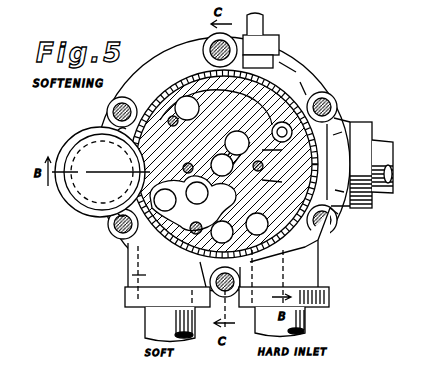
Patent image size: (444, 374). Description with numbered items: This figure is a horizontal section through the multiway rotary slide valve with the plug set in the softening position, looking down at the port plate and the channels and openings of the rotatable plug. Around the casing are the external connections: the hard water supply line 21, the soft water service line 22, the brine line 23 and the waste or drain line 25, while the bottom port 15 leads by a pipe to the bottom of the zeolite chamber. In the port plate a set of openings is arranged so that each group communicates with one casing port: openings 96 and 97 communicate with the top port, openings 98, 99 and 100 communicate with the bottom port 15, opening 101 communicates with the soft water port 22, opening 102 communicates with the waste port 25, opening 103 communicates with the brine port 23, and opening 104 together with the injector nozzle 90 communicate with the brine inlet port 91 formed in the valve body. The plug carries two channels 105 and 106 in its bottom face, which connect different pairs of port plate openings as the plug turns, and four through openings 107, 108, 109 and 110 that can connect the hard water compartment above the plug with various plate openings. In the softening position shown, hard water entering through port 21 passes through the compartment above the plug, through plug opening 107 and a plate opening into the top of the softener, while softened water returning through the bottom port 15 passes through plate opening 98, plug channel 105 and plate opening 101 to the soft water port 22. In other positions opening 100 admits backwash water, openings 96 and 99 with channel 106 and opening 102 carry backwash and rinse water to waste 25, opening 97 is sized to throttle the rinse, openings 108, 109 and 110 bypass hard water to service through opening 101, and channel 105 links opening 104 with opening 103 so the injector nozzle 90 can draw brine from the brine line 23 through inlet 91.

The injector nozzle 90 is at (205, 44).
The brine inlet port 91 is at (168, 84).
The port plate opening 99 is at (100, 172).
The bottom port 15 is at (102, 172).
The port plate opening 100 is at (102, 172).
The plug opening 110 is at (187, 108).
The plug channel 106 is at (237, 143).
The port plate opening 102 is at (222, 165).
The port plate opening 98 is at (197, 193).
The port plate opening 101 is at (165, 200).
The plug channel 105 is at (195, 221).
The plug opening 107 is at (222, 232).
The plug opening 108 is at (257, 224).
The port plate opening 104 is at (261, 51).
The brine line 23 is at (264, 18).
The port plate opening 103 is at (278, 68).
The plug opening 109 is at (312, 90).
The port plate opening 97 is at (352, 121).
The waste or drain line 25 is at (380, 141).
The port plate opening 96 is at (338, 222).
The soft water service line 22 is at (128, 283).
The hard water supply line 21 is at (289, 272).